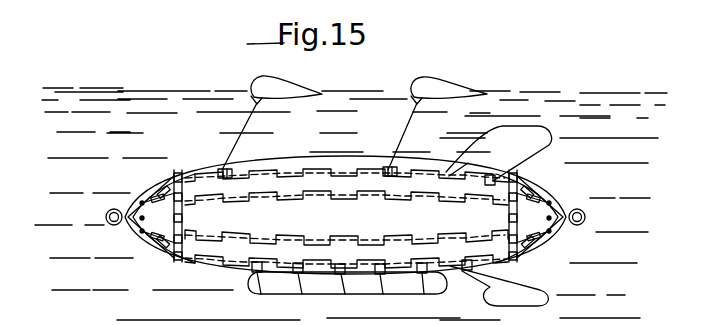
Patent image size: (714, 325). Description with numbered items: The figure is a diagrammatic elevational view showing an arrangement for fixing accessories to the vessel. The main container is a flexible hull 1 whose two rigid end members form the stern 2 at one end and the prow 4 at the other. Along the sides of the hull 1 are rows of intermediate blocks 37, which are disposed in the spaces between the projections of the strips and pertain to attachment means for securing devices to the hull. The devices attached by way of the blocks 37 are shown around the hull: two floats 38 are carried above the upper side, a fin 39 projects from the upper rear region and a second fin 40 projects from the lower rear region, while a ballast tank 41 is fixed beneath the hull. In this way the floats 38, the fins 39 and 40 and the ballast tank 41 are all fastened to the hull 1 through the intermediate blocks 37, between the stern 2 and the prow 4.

The flexible hull 1 is at (299, 151).
The stern 2 is at (544, 190).
The prow 4 is at (156, 188).
The intermediate blocks 37 is at (222, 168).
The floats 38 is at (253, 85).
The fin 39 is at (474, 153).
The fin 40 is at (534, 292).
The ballast tanks 41 is at (404, 288).